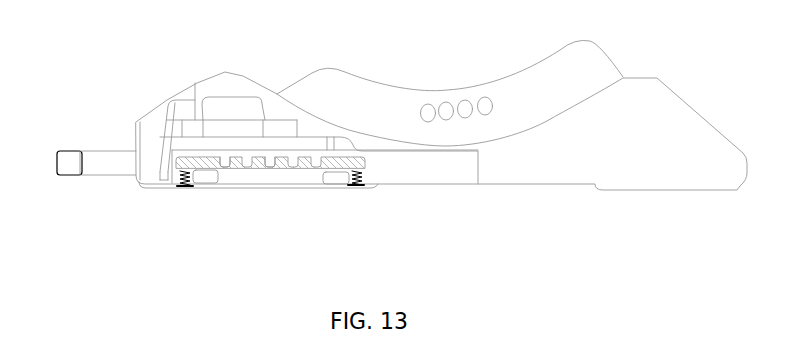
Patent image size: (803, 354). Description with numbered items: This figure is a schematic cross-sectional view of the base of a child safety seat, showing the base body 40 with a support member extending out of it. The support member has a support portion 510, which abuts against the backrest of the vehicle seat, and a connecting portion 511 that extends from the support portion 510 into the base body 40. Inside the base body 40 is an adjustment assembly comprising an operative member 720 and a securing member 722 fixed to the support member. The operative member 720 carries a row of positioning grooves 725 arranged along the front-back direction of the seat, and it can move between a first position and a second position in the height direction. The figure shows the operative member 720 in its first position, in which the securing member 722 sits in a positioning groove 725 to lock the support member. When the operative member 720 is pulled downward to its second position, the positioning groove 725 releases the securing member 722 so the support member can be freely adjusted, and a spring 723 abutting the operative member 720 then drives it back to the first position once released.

The base body 40 is at (172, 97).
The support portion 510 is at (73, 162).
The connecting portion 511 is at (235, 160).
The operative member 720 is at (238, 173).
The securing member 722 is at (269, 162).
The positioning groove 725 is at (283, 160).
The spring 723 is at (355, 183).